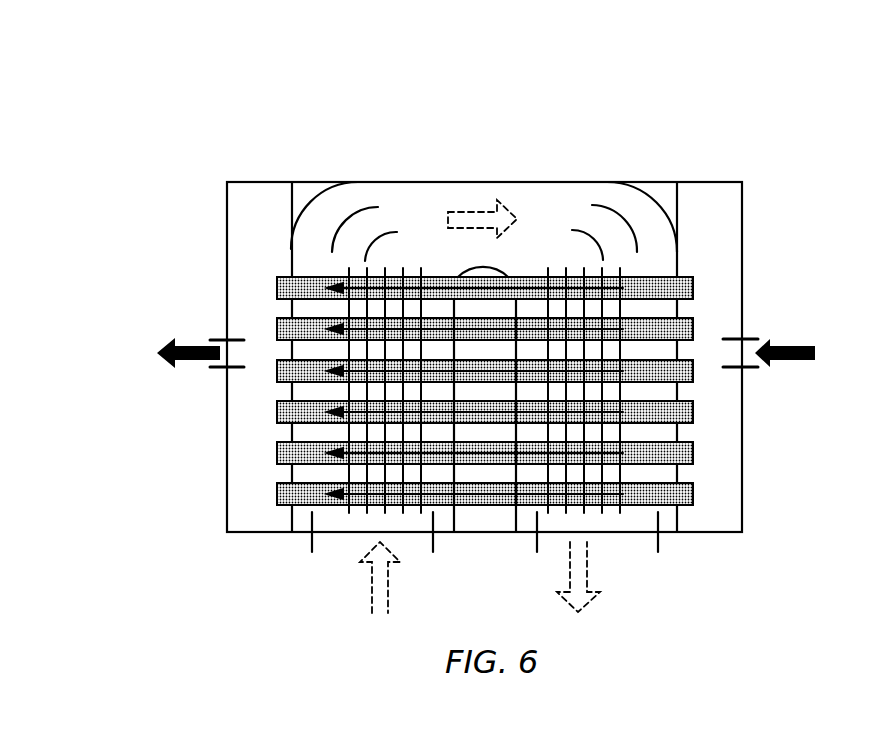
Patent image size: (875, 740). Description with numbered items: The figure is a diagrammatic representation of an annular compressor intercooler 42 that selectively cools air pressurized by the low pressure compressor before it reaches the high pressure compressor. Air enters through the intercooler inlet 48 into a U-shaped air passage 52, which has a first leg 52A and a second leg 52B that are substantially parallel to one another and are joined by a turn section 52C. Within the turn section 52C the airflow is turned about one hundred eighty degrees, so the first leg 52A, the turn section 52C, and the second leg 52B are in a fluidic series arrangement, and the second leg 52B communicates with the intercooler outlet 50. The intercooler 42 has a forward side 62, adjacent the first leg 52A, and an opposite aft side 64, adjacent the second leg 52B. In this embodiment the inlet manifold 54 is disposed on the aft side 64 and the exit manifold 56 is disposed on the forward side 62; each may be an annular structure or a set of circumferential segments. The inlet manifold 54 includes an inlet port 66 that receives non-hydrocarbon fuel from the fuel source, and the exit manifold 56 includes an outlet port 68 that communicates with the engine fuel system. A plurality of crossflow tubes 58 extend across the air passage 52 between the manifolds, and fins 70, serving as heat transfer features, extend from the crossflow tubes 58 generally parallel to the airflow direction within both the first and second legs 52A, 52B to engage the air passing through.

The annular compressor intercooler 42 is at (726, 58).
The intercooler inlet 48 is at (310, 542).
The intercooler outlet 50 is at (658, 540).
The U-shaped air passage 52 is at (486, 221).
The first leg 52A is at (317, 310).
The second leg 52B is at (663, 310).
The turn section 52C is at (541, 202).
The inlet manifold 54 is at (727, 486).
The exit manifold 56 is at (246, 502).
The crossflow tubes 58 is at (282, 372).
The forward side 62 is at (203, 261).
The aft side 64 is at (772, 261).
The inlet port 66 is at (753, 337).
The outlet port 68 is at (213, 369).
The fins 70 is at (365, 473).